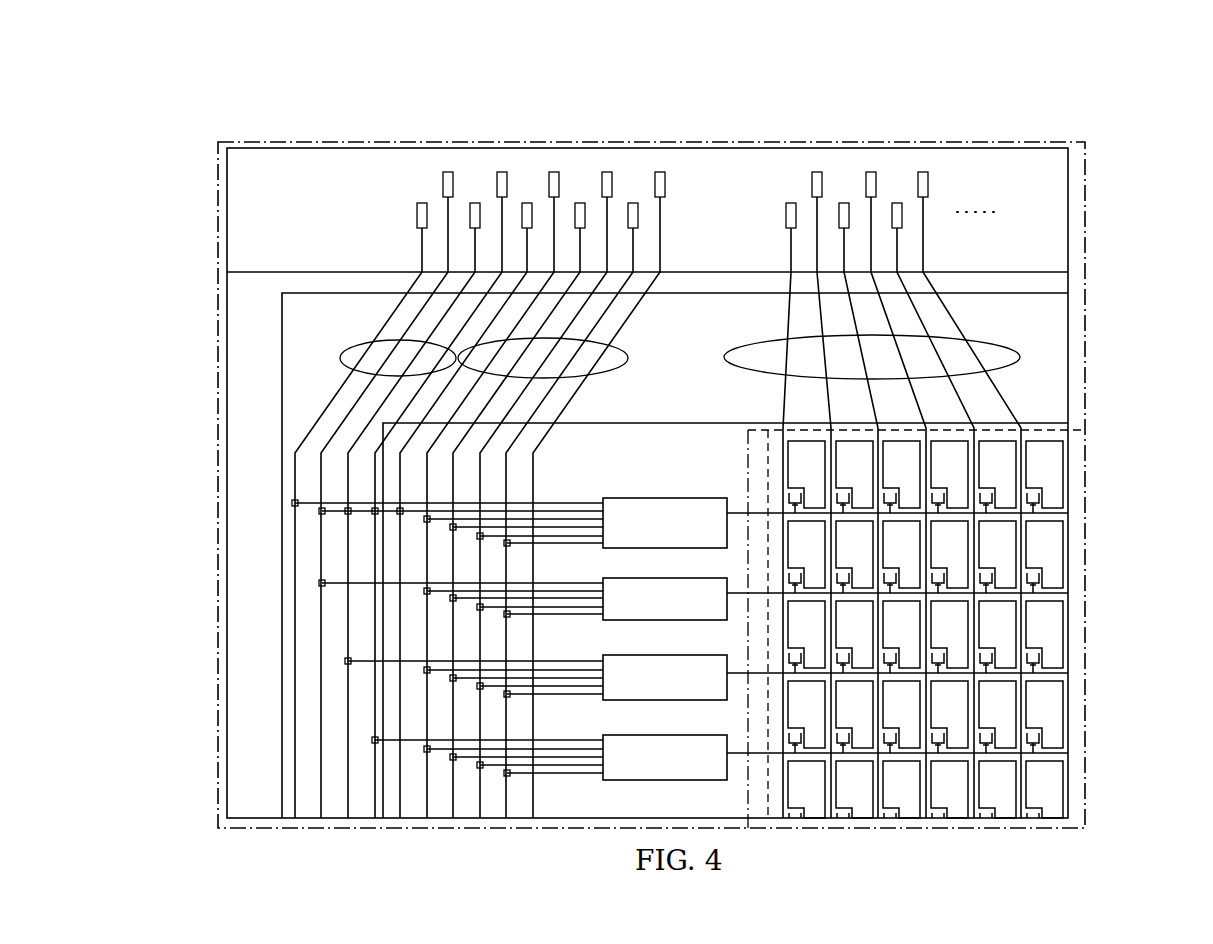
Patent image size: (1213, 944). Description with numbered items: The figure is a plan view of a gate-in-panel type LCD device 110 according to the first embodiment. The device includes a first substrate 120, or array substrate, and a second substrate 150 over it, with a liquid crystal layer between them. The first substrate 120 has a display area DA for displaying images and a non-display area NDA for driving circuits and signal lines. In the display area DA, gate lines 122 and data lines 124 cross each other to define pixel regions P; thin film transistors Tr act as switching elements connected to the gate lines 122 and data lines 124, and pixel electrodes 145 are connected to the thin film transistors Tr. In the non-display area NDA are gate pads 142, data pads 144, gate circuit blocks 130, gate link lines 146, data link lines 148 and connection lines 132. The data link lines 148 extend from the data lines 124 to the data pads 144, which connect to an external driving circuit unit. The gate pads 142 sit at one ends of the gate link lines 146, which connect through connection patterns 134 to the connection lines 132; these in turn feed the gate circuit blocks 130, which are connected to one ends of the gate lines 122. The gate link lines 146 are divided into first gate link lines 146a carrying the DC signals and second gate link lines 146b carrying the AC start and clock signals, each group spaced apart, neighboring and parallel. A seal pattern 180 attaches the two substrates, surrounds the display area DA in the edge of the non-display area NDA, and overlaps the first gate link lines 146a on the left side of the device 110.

The GIP type LCD device 110 is at (1024, 134).
The first substrate 120 is at (350, 144).
The gate lines 122 is at (757, 596).
The data lines 124 is at (1030, 450).
The gate circuit blocks 130 is at (648, 498).
The connection lines 132 is at (563, 497).
The connection patterns 134 is at (288, 503).
The gate pads 142 is at (668, 133).
The data pads 144 is at (943, 104).
The pixel electrodes 145 is at (902, 507).
The gate link lines 146 is at (410, 265).
The first gate link lines 146a is at (338, 348).
The second gate link lines 146b is at (485, 342).
The data link lines 148 is at (988, 325).
The second substrate 150 is at (728, 272).
The seal pattern 180 is at (280, 745).
The pixel regions P is at (1055, 497).
The thin film transistors Tr is at (787, 500).
The non-display area NDA is at (1085, 272).
The display area DA is at (1085, 657).